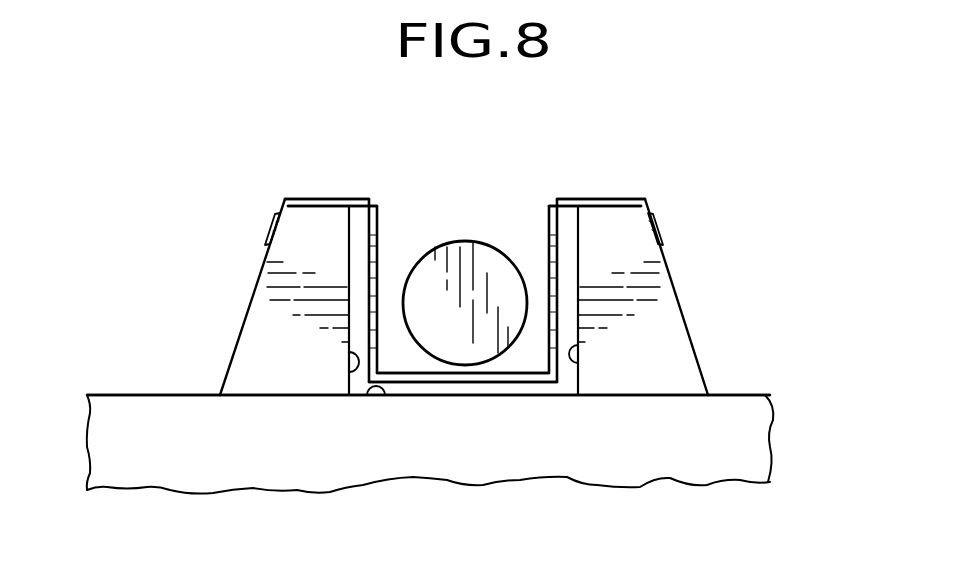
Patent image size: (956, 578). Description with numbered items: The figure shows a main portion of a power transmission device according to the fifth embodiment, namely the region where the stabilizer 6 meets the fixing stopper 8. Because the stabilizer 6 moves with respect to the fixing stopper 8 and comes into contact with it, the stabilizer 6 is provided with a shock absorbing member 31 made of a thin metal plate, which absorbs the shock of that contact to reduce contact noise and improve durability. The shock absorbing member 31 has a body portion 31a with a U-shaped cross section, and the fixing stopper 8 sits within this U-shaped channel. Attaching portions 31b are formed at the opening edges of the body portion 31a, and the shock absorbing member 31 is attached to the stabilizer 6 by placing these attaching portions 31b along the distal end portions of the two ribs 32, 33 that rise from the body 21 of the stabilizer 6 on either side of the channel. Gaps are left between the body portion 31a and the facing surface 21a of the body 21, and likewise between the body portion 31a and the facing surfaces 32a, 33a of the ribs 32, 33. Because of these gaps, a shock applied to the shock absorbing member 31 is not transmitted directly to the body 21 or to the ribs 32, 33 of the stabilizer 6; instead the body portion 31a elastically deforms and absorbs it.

The stabilizer 6 is at (757, 447).
The fixing stopper 8 is at (473, 257).
The body 21 is at (642, 455).
The facing surface 21a is at (387, 395).
The shock absorbing member 31 is at (437, 382).
The body portion 31a is at (515, 375).
The attaching portions 31b is at (322, 199).
The rib 32 is at (270, 317).
The facing surface 32a is at (347, 373).
The rib 33 is at (665, 312).
The facing surface 33a is at (578, 360).